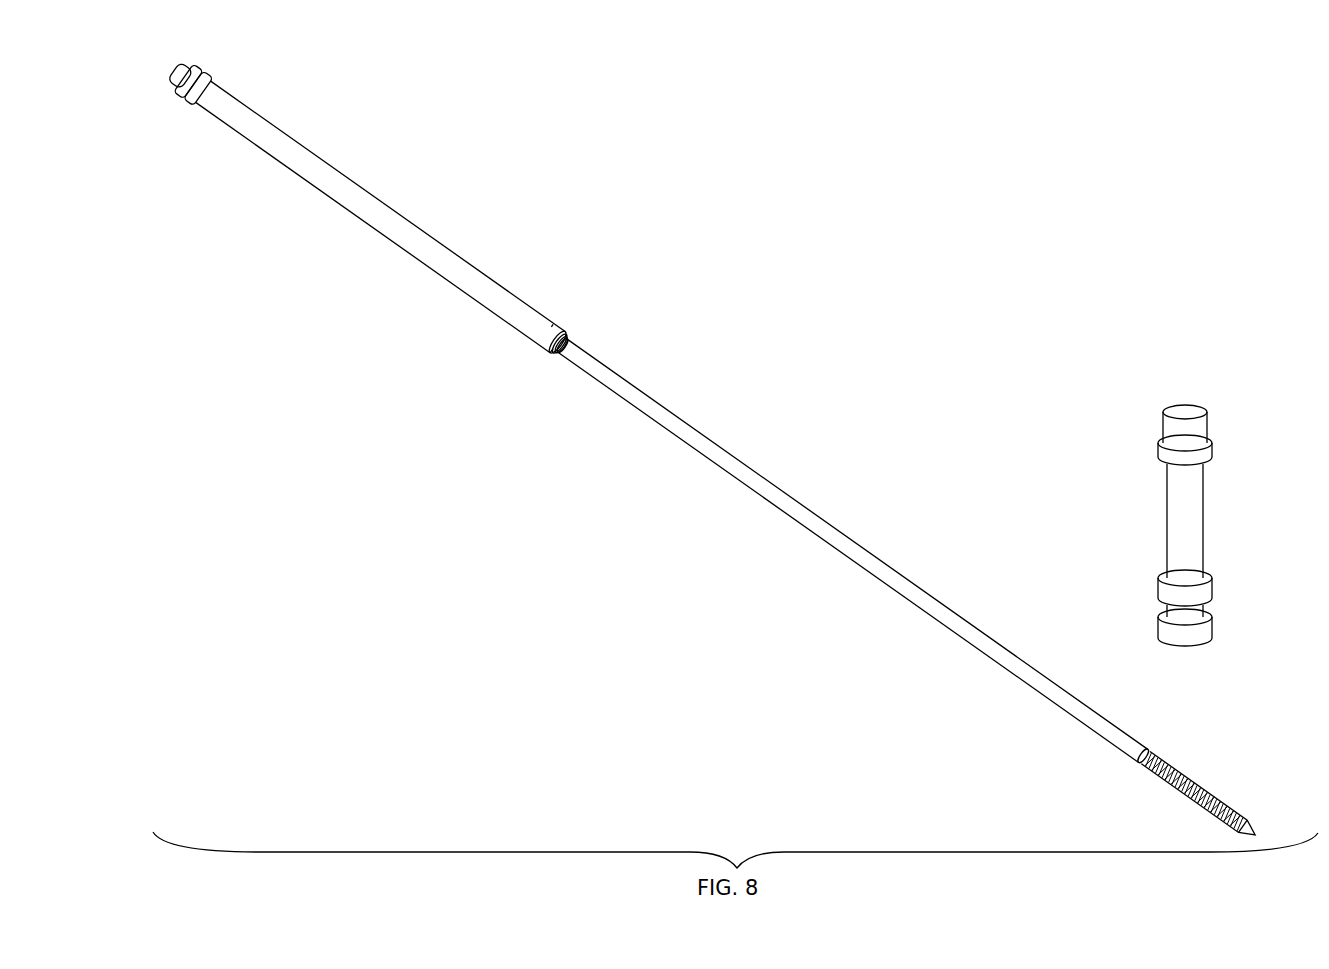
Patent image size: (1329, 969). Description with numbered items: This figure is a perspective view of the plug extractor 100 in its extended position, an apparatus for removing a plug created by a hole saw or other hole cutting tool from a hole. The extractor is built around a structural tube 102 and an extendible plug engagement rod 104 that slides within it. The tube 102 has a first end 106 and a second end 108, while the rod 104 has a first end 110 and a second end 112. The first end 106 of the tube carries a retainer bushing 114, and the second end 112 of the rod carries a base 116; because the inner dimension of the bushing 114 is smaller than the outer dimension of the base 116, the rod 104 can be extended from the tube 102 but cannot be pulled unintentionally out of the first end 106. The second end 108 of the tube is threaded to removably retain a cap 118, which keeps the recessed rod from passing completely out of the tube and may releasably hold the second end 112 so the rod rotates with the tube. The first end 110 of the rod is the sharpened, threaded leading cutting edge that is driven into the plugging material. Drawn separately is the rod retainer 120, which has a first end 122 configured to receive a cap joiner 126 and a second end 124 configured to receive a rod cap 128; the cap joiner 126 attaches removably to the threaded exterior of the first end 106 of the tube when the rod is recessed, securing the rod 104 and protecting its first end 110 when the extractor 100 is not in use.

The plug extractor 100 is at (785, 193).
The structural tube 102 is at (405, 217).
The extendible plug engagement rod 104 is at (878, 555).
The first end of the tube 106 is at (560, 330).
The second end of the tube 108 is at (221, 90).
The first end of the plug engagement rod 110 is at (1195, 785).
The second end of the plug engagement rod 112 is at (575, 340).
The retainer bushing 114 is at (551, 357).
The base 116 is at (545, 334).
The cap 118 is at (181, 104).
The rod retainer 120 is at (1132, 517).
The first end of the rod retainer 122 is at (1162, 580).
The second end of the rod retainer 124 is at (1160, 462).
The cap joiner 126 is at (1160, 632).
The rod cap 128 is at (1164, 418).